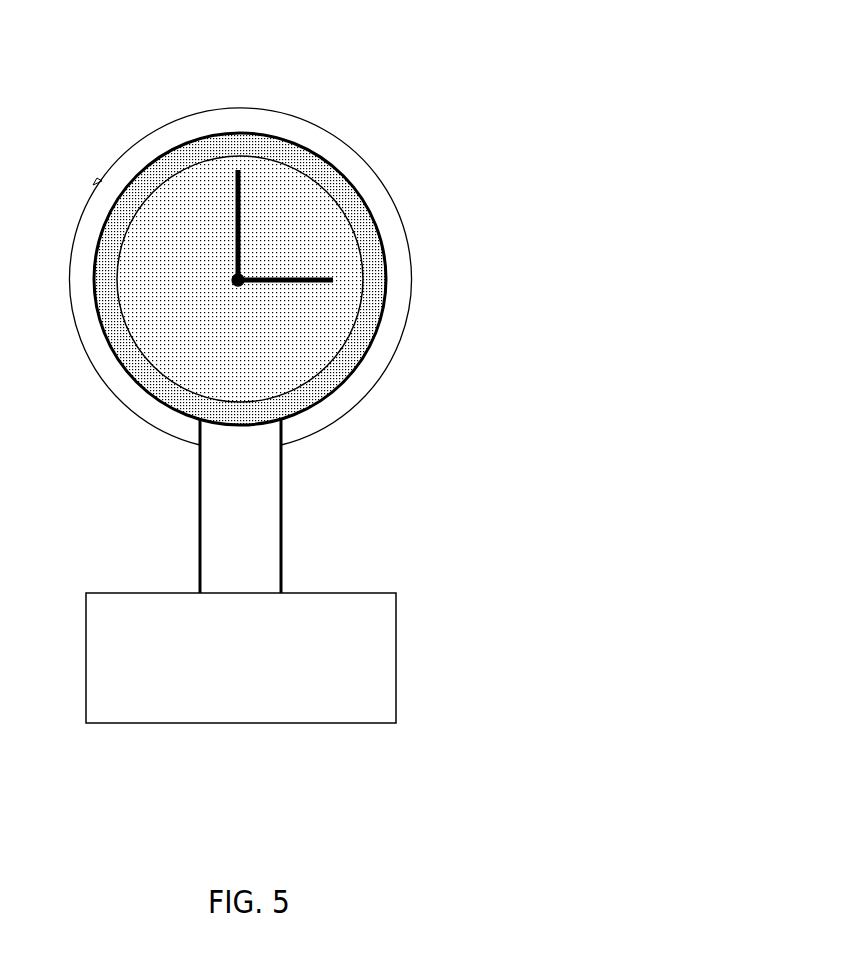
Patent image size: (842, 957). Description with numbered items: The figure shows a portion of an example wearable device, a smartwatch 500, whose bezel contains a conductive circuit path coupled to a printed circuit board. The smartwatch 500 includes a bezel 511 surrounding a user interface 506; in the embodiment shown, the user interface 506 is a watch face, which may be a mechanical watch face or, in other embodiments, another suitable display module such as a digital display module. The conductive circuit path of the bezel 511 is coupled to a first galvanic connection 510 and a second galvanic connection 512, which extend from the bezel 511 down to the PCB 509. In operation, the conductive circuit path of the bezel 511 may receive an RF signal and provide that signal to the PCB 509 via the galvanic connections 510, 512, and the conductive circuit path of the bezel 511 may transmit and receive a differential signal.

The smartwatch 500 is at (836, 28).
The user interface 506 is at (326, 321).
The bezel 511 is at (412, 272).
The first galvanic connection 510 is at (200, 492).
The second galvanic connection 512 is at (282, 494).
The printed circuit board (PCB) 509 is at (396, 657).